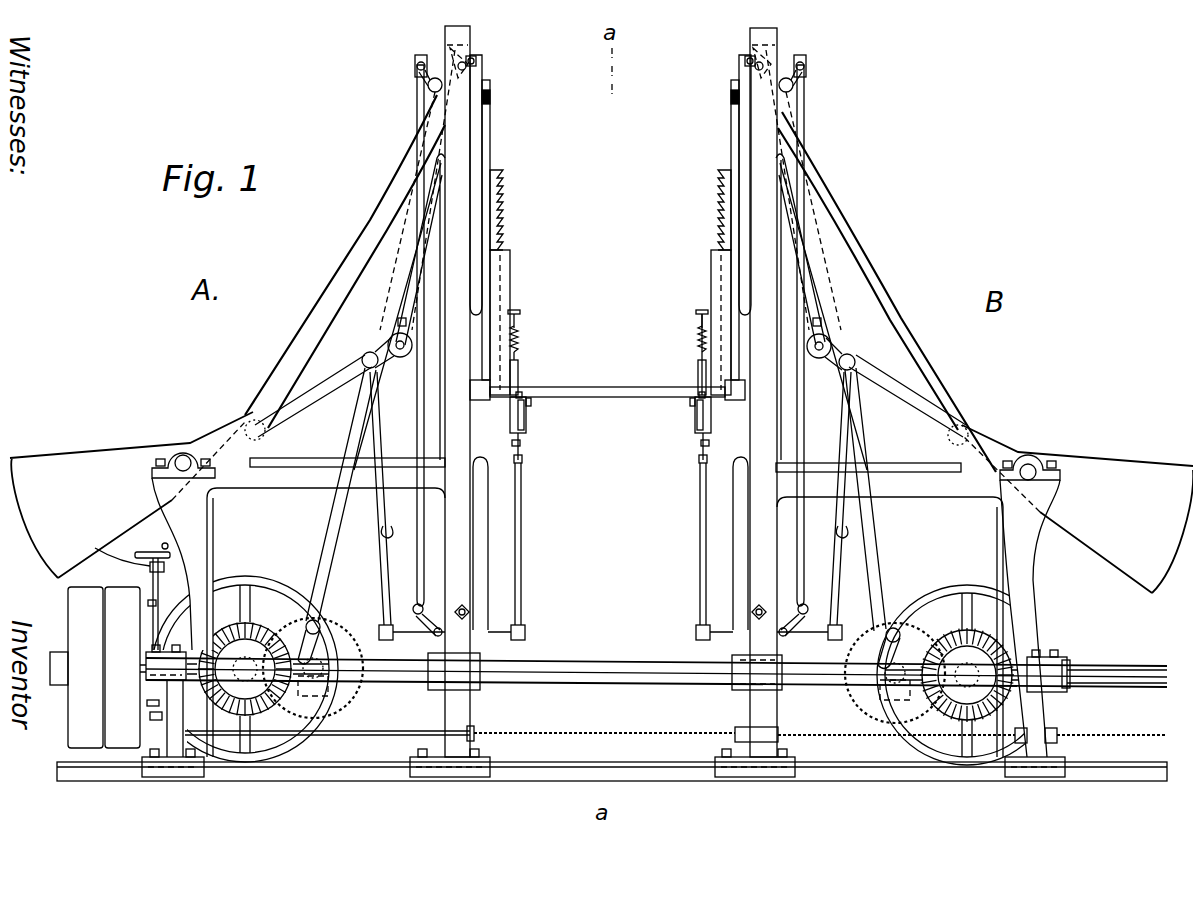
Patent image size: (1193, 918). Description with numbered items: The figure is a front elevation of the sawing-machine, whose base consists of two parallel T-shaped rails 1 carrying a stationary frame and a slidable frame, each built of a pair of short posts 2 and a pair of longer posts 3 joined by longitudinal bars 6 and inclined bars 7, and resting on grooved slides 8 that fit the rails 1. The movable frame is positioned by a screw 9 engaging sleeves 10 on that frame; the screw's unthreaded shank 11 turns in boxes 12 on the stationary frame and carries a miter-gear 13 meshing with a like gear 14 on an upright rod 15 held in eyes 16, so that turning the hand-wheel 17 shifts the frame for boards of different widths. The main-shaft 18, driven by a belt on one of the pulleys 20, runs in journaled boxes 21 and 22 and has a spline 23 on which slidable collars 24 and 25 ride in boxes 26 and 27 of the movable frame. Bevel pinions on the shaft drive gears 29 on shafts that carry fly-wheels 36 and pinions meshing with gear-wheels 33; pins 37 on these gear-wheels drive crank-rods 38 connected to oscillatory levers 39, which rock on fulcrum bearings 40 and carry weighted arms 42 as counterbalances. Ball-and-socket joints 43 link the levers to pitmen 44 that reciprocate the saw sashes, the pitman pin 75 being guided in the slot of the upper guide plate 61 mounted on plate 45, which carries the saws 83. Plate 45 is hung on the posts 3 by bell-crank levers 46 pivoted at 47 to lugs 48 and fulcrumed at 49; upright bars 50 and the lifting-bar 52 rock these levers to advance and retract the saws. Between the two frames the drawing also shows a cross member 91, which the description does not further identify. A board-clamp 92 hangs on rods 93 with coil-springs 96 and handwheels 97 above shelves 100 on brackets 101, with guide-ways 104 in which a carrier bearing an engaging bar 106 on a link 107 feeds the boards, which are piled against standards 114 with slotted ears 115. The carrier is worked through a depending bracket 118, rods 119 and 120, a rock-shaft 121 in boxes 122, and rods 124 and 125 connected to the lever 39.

The rails 1 is at (540, 775).
The short posts 2 is at (176, 778).
The longer posts 3 is at (447, 28).
The longitudinal bars 6 is at (244, 500).
The inclined bars 7 is at (318, 292).
The grooved slides 8 is at (190, 777).
The screw 9 is at (647, 735).
The sleeves 10 is at (735, 736).
The shank 11 is at (378, 732).
The boxes 12 is at (474, 730).
The miter-gear 13 is at (158, 740).
The miter-gear 14 is at (150, 720).
The upright rod 15 is at (150, 568).
The eyes 16 is at (148, 568).
The hand-wheel 17 is at (153, 552).
The main-shaft 18 is at (620, 684).
The pulleys 20 is at (122, 598).
The journaled box 21 is at (482, 682).
The journaled box 22 is at (170, 652).
The spline 23 is at (596, 675).
The slidable collar 24 is at (736, 688).
The slidable collar 25 is at (1070, 664).
The box 26 is at (732, 660).
The box 27 is at (1055, 657).
The gears 29 is at (263, 632).
The gear-wheel 33 is at (340, 720).
The fly-wheel 36 is at (292, 757).
The pins 37 is at (322, 624).
The crank-rods 38 is at (270, 455).
The oscillatory levers 39 is at (235, 425).
The fulcrum bearings 40 is at (183, 455).
The weighted arms 42 is at (86, 455).
The ball-and-socket joints 43 is at (388, 345).
The pitmen 44 is at (413, 283).
The plate 45 is at (483, 122).
The bell-crank levers 46 is at (428, 82).
The pivot 47 is at (478, 62).
The lugs 48 is at (462, 62).
The fulcrum 49 is at (425, 80).
The upright bar 50 is at (417, 118).
The lifting-bar 52 is at (440, 128).
The upper guide plate 61 is at (492, 146).
The pitman pin 75 is at (492, 98).
The saws 83 is at (503, 192).
The cross bar 91 is at (603, 387).
The board-clamp 92 is at (520, 368).
The rods 93 is at (700, 314).
The coil-springs 96 is at (520, 338).
The handwheels 97 is at (520, 312).
The shelf 100 is at (510, 424).
The brackets 101 is at (504, 443).
The guide-ways 104 is at (522, 436).
The board-engaging device 106 is at (522, 392).
The link 107 is at (531, 402).
The vertical standards 114 is at (512, 284).
The slotted ears 115 is at (505, 268).
The depending bracket 118 is at (523, 460).
The rod 119 is at (522, 490).
The rod 120 is at (525, 630).
The rock-shaft 121 is at (410, 632).
The boxes 122 is at (850, 635).
The rod 124 is at (384, 600).
The rod 125 is at (360, 425).